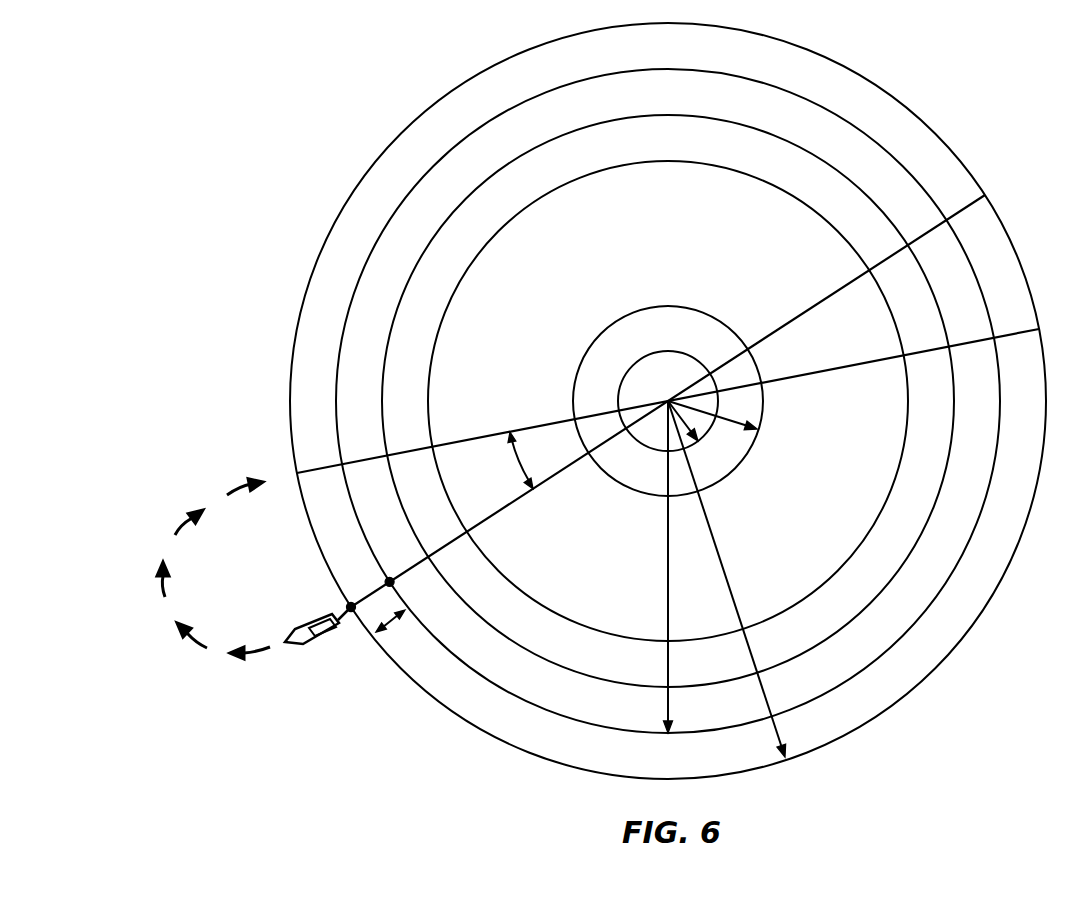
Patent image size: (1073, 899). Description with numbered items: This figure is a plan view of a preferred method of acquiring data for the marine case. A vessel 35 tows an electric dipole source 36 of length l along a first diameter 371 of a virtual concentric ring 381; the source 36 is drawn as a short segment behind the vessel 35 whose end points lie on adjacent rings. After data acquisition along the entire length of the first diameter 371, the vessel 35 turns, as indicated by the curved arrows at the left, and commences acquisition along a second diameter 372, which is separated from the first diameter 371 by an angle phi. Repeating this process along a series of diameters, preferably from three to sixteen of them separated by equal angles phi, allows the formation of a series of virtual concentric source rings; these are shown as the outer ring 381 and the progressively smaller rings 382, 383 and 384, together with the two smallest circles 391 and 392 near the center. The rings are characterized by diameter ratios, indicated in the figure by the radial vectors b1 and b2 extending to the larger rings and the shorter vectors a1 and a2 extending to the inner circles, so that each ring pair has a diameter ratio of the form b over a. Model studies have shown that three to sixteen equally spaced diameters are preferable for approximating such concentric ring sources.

The vessel 35 is at (294, 645).
The electric dipole source 36 is at (380, 592).
The first diameter 371 is at (835, 290).
The second diameter 372 is at (873, 360).
The virtual concentric ring 381 is at (875, 718).
The virtual concentric ring 382 is at (878, 660).
The virtual concentric ring 383 is at (882, 592).
The virtual concentric ring 384 is at (853, 555).
The outer inner circle 391 is at (748, 452).
The innermost circle 392 is at (677, 350).
The ring diameter a1 is at (742, 420).
The ring diameter a2 is at (698, 443).
The ring diameter b1 is at (778, 735).
The ring diameter b2 is at (670, 716).
The angle phi is at (518, 466).
The length l is at (392, 622).